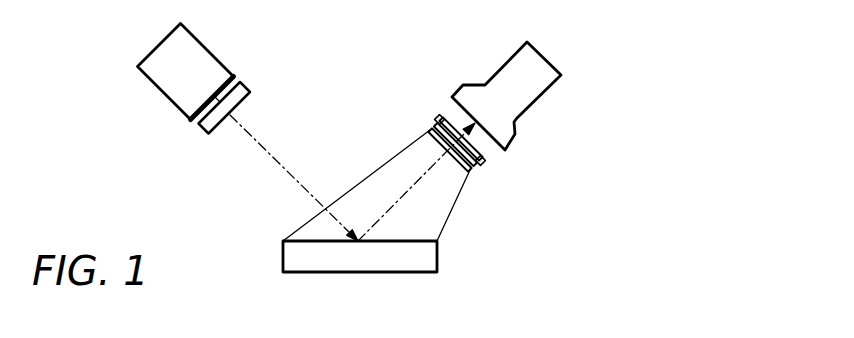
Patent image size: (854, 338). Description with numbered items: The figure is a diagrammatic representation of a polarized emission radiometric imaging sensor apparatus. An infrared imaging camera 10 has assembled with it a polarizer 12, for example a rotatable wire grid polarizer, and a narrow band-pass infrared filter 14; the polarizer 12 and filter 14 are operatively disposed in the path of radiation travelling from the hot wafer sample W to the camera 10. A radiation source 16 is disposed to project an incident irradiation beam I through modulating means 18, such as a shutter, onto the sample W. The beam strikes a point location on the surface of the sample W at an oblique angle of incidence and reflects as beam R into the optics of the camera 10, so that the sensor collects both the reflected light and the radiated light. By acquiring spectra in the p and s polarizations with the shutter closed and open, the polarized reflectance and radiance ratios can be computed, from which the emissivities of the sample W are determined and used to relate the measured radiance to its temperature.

The infrared imaging camera 10 is at (469, 93).
The polarizer 12 is at (474, 173).
The narrow band-pass infrared filter 14 is at (440, 117).
The radiation source 16 is at (153, 66).
The modulating means 18 is at (252, 88).
The incident irradiation beam I is at (268, 182).
The reflected beam R is at (396, 172).
The hot wafer sample W is at (310, 260).